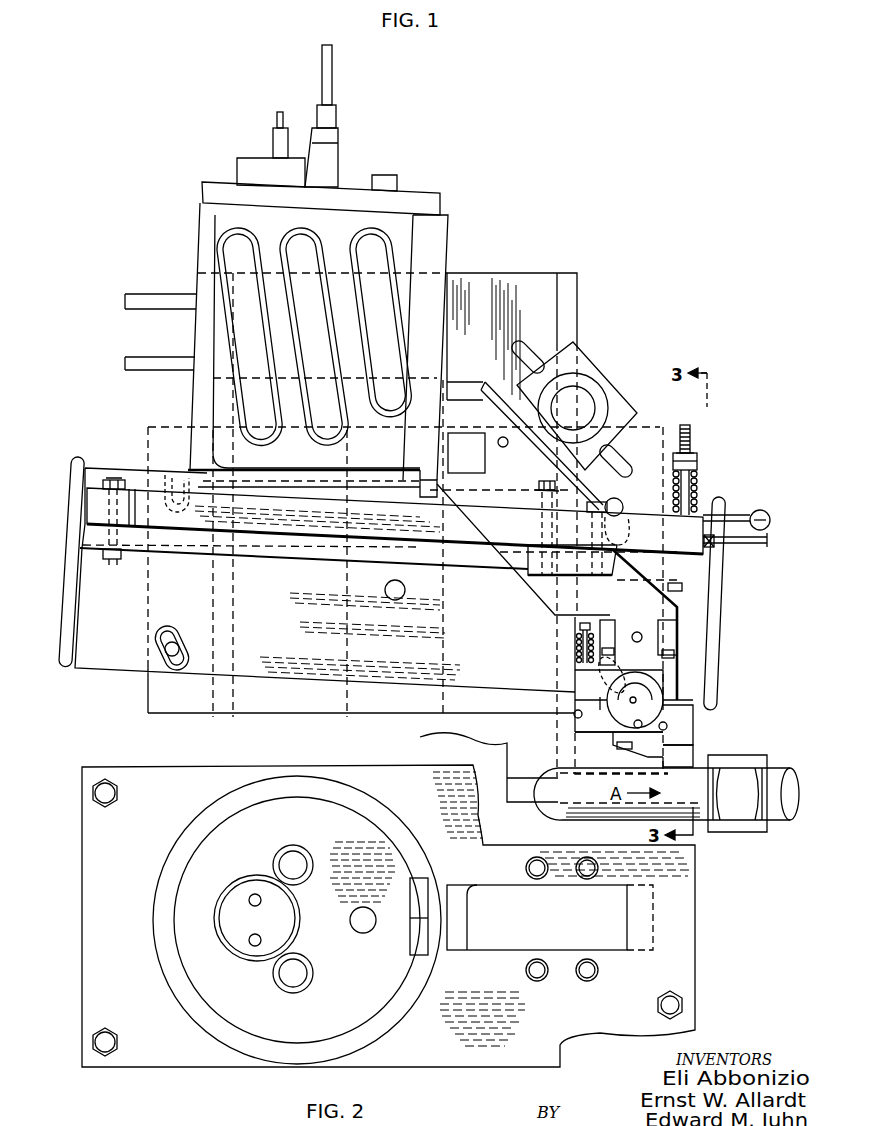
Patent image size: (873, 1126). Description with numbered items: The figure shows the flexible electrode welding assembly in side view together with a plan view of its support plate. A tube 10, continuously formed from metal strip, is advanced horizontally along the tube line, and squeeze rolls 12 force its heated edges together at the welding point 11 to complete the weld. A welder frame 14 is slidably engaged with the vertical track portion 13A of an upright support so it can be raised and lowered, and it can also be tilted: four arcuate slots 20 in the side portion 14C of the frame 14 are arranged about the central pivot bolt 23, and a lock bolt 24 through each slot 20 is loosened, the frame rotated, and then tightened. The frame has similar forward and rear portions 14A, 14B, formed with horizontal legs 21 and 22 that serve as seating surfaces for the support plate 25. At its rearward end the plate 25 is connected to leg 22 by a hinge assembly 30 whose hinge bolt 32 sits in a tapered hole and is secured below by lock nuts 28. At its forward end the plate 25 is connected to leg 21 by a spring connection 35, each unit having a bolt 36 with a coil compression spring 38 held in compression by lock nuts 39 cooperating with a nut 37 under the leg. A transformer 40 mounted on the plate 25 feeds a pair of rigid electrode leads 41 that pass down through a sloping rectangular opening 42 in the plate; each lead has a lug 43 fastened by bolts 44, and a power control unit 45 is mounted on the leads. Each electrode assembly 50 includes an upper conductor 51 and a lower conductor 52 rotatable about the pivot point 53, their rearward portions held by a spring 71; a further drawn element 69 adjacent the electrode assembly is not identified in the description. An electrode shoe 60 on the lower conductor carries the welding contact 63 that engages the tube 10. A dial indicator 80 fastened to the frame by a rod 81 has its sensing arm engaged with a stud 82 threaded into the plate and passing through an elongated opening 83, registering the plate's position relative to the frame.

In FIG. 1, the tube 10 is at (618, 773).
In FIG. 1, the welding point 11 is at (740, 755).
In FIG. 1, the squeeze rolls 12 is at (742, 832).
In FIG. 1, the vertical track portion 13A is at (570, 300).
In FIG. 1, the welder frame 14 is at (201, 562).
In FIG. 1, the forward portion of the frame 14A is at (718, 590).
In FIG. 1, the rear portion of the frame 14B is at (73, 530).
In FIG. 1, the side portion of the frame 14C is at (325, 555).
In FIG. 1, the arcuate slots 20 is at (165, 636).
In FIG. 1, the horizontal leg 21 is at (703, 541).
In FIG. 1, the horizontal leg 22 is at (133, 527).
In FIG. 1, the central pivot bolt 23 is at (385, 594).
In FIG. 1, the lock bolt 24 is at (163, 655).
In FIG. 1, the support plate 25 is at (92, 502).
In FIG. 2, the support plate 25 is at (147, 780).
In FIG. 1, the lock nuts 28 is at (107, 559).
In FIG. 1, the hinge assembly 30 is at (106, 474).
In FIG. 1, the hinge bolt 32 is at (114, 479).
In FIG. 2, the hinge bolt 32 is at (108, 803).
In FIG. 1, the spring connection 35 is at (699, 452).
In FIG. 1, the bolt 36 is at (680, 430).
In FIG. 1, the nut 37 is at (660, 590).
In FIG. 1, the coil compression spring 38 is at (697, 497).
In FIG. 1, the lock nuts 39 is at (697, 463).
In FIG. 2, the lock nuts 39 is at (657, 1006).
In FIG. 1, the transformer 40 is at (400, 215).
In FIG. 2, the transformer 40 is at (205, 878).
In FIG. 1, the electrode leads 41 is at (462, 410).
In FIG. 2, the sloping rectangular opening 42 is at (527, 887).
In FIG. 1, the lug 43 is at (578, 575).
In FIG. 1, the bolts 44 is at (541, 486).
In FIG. 2, the bolts 44 is at (585, 976).
In FIG. 1, the power control unit 45 is at (592, 375).
In FIG. 1, the electrode assembly 50 is at (536, 660).
In FIG. 1, the upper conductor 51 is at (577, 668).
In FIG. 1, the lower conductor 52 is at (575, 727).
In FIG. 1, the pivot point 53 is at (636, 700).
In FIG. 1, the electrode shoe 60 is at (668, 728).
In FIG. 1, the welding contact 63 is at (677, 762).
In FIG. 1, the stop block 69 is at (670, 650).
In FIG. 1, the spring 71 is at (578, 641).
In FIG. 1, the dial indicator 80 is at (763, 510).
In FIG. 1, the rod 81 is at (737, 514).
In FIG. 1, the stud 82 is at (745, 541).
In FIG. 1, the elongated opening 83 is at (770, 521).